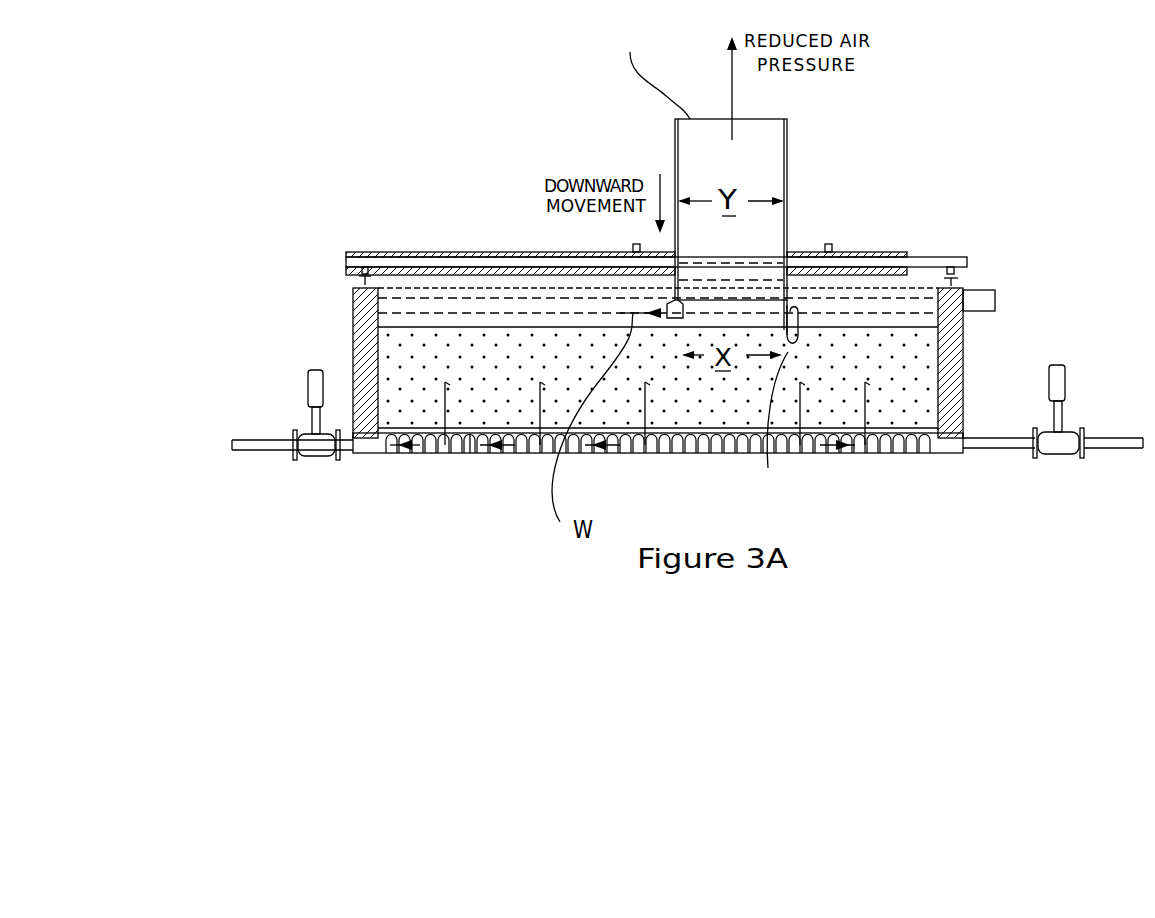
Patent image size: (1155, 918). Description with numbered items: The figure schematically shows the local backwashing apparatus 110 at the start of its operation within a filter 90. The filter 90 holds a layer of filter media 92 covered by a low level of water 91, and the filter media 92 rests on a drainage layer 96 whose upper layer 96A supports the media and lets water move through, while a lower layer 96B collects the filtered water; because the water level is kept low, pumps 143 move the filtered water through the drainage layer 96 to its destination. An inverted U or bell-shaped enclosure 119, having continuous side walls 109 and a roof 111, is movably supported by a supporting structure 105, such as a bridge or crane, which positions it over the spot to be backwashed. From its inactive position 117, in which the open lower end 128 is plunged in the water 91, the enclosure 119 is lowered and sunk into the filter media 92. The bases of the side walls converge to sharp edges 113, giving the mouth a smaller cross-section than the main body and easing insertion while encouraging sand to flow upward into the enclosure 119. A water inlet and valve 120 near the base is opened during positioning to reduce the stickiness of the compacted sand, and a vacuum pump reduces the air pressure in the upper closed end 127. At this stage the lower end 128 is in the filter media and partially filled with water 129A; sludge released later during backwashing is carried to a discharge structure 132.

The filter 90 is at (958, 407).
The water 91 is at (960, 318).
The filter media 92 is at (930, 372).
The drainage layer 96 is at (890, 452).
The upper layer of drainage layer 96A is at (462, 442).
The lower layer of drainage layer 96B is at (473, 454).
The supporting structure 105 is at (947, 256).
The side walls 109 is at (775, 419).
The local backwashing apparatus 110 is at (480, 56).
The roof 111 is at (660, 71).
The sharp edges 113 is at (800, 350).
The inactive position 117 is at (545, 56).
The enclosure 119 is at (674, 160).
The water inlet and valve 120 is at (672, 302).
The upper closed end 127 is at (772, 170).
The open lower end 128 is at (812, 253).
The water partially filling lower end 129A is at (731, 263).
The discharge structure 132 is at (996, 300).
The pumps 143 is at (304, 434).